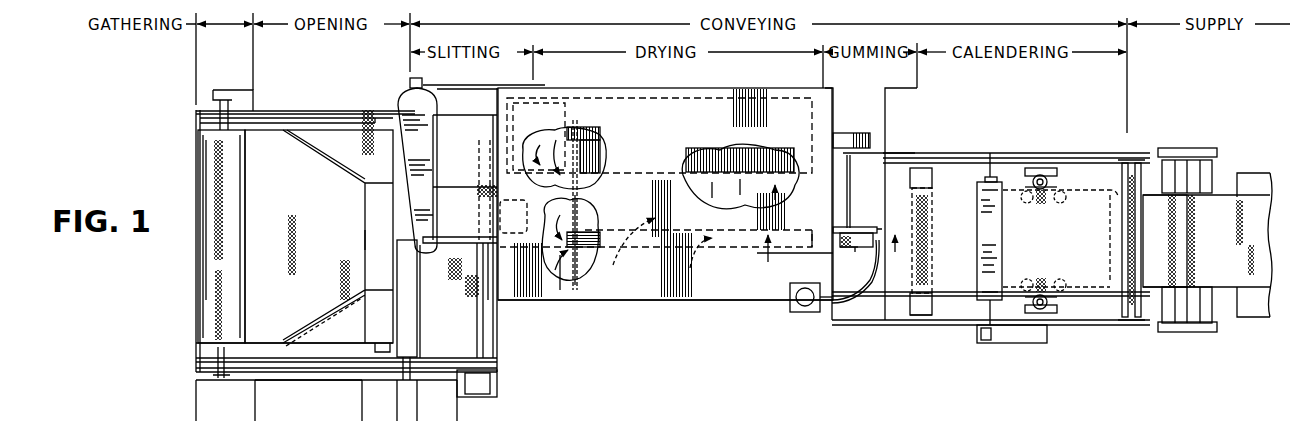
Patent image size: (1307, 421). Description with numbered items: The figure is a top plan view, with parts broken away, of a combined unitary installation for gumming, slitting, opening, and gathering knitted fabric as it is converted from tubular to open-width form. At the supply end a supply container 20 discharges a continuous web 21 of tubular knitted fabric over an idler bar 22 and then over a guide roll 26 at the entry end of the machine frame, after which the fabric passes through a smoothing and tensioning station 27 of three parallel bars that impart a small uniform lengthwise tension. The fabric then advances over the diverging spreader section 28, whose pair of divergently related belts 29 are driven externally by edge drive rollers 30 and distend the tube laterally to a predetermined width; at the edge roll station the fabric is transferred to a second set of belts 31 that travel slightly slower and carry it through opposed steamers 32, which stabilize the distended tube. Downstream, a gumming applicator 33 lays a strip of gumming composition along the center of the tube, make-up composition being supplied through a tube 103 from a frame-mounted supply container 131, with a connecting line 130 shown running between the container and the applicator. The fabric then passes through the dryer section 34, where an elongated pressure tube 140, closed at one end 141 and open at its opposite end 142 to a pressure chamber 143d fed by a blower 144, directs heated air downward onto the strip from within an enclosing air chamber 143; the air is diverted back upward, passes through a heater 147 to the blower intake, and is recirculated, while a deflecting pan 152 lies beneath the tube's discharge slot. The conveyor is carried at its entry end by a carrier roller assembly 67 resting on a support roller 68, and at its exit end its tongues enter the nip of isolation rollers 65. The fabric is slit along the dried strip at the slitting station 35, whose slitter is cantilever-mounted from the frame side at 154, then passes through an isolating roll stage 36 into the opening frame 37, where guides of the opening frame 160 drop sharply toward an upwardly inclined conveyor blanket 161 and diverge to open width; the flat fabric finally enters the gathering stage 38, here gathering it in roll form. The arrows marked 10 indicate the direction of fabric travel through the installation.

The web 10 is at (831, 261).
The supply container 20 is at (1262, 318).
The continuous web of tubular knitted fabric 21 is at (1222, 200).
The idler bar 22 is at (1198, 165).
The guide roll 26 is at (1172, 310).
The smoothing and tensioning station 27 is at (1132, 320).
The spreader section 28 is at (1087, 247).
The divergently related belts 29 is at (1096, 200).
The edge drive rollers 30 is at (1049, 182).
The second set of belts 31 is at (1037, 241).
The opposed steamers 32 is at (1003, 240).
The gumming applicator 33 is at (855, 227).
The dryer section 34 is at (622, 300).
The slitting station 35 is at (475, 250).
The isolating roll stage 36 is at (422, 273).
The opening frame 37 is at (315, 214).
The gathering stage 38 is at (232, 241).
The isolation roller 65 is at (408, 346).
The carrier roller assembly 67 is at (928, 214).
The support roller 68 is at (922, 316).
The tube 103 is at (852, 247).
The gum supply pipe 130 is at (860, 290).
The supply container 131 is at (800, 313).
The pressure tube 140 is at (590, 228).
The closed end of pressure tube 141 is at (810, 245).
The open end of pressure tube 142 is at (578, 210).
The air chamber housing 143 is at (712, 206).
The pressure chamber 143d is at (565, 280).
The blower 144 is at (555, 140).
The heater 147 is at (722, 150).
The deflecting pan 152 is at (490, 338).
The cantilever slitter mounting 154 is at (487, 383).
The opening frame 160 is at (362, 240).
The conveyor blanket 161 is at (320, 343).